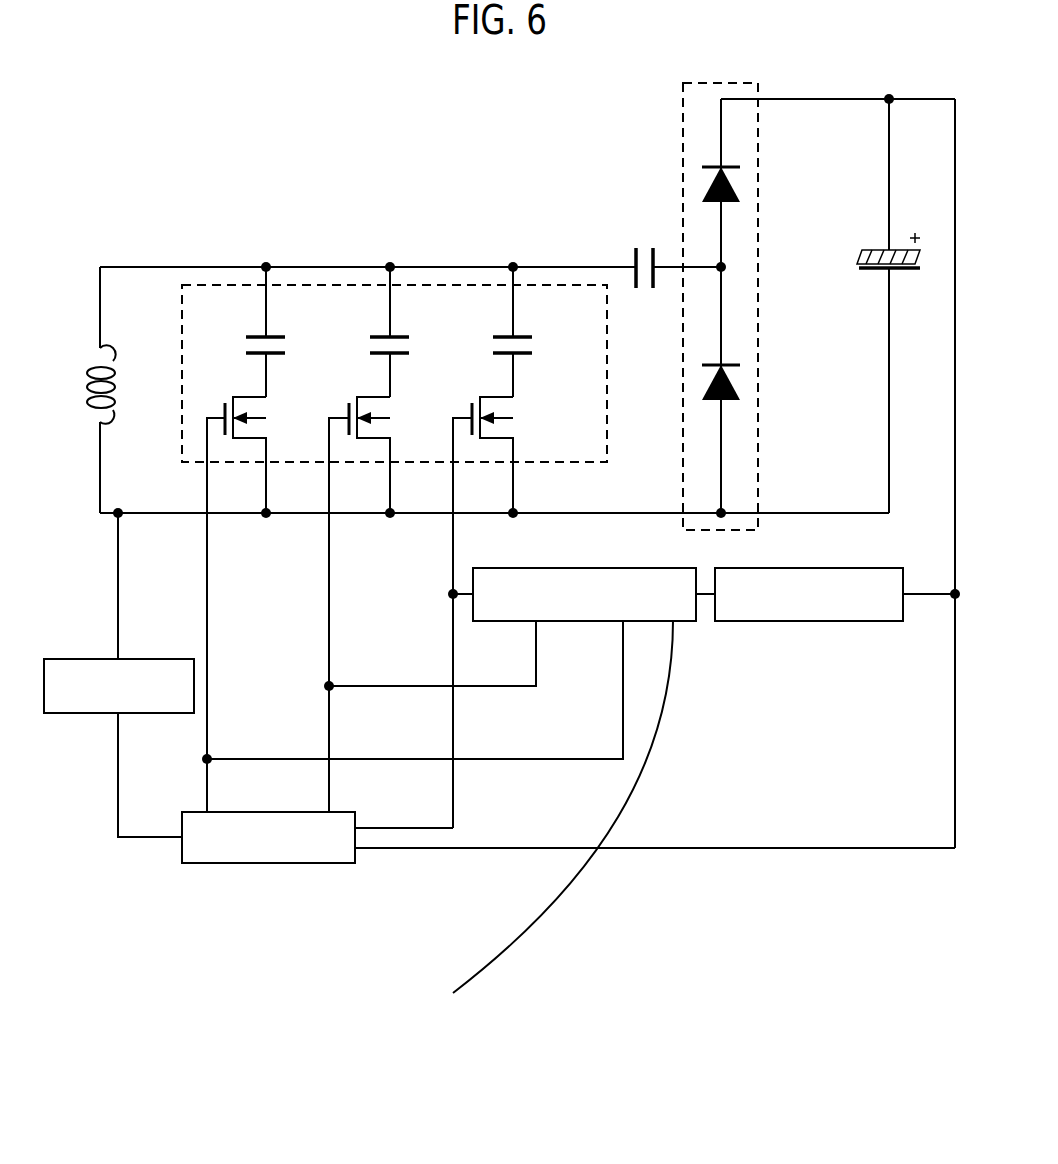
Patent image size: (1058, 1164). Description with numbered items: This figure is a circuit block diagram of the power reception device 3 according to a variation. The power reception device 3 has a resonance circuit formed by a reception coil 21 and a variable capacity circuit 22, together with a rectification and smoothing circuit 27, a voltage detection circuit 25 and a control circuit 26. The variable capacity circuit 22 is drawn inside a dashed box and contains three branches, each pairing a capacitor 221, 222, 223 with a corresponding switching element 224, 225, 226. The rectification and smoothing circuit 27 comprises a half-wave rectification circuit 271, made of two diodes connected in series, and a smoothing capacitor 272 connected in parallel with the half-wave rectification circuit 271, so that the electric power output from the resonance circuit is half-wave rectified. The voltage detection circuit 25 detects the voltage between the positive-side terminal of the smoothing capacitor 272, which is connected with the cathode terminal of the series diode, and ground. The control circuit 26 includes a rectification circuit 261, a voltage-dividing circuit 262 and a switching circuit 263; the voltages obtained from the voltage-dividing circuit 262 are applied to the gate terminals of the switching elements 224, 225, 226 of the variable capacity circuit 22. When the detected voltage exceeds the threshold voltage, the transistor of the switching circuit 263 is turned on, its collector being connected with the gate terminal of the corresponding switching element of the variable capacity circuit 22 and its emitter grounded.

The power reception device 3 is at (862, 1005).
The reception coil 21 is at (85, 392).
The variable capacity circuit 22 is at (606, 388).
The capacitor 221 is at (276, 331).
The capacitor 222 is at (399, 331).
The capacitor 223 is at (523, 331).
The switching element 224 is at (265, 407).
The switching element 225 is at (389, 407).
The switching element 226 is at (513, 407).
The voltage detection circuit 25 is at (822, 622).
The control circuit 26 is at (499, 798).
The rectification circuit 261 is at (82, 713).
The voltage-dividing circuit 262 is at (307, 865).
The switching circuit 263 is at (200, 1023).
The rectification and smoothing circuit 27 is at (801, 306).
The half-wave rectification circuit 271 is at (758, 250).
The smoothing capacitor 272 is at (878, 219).